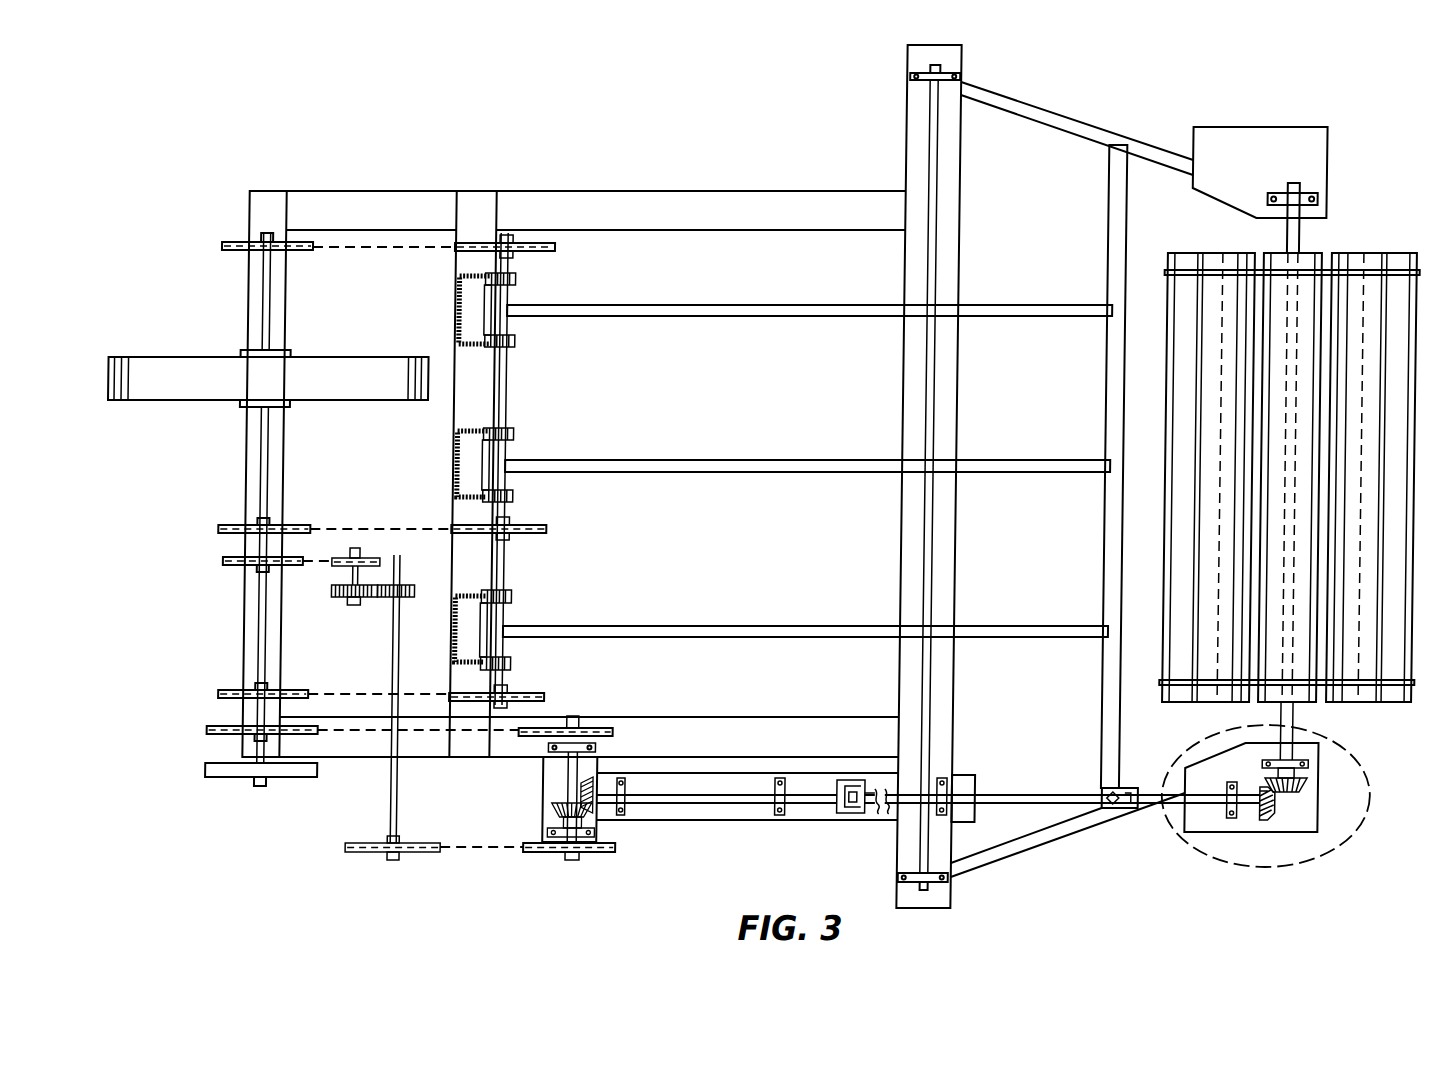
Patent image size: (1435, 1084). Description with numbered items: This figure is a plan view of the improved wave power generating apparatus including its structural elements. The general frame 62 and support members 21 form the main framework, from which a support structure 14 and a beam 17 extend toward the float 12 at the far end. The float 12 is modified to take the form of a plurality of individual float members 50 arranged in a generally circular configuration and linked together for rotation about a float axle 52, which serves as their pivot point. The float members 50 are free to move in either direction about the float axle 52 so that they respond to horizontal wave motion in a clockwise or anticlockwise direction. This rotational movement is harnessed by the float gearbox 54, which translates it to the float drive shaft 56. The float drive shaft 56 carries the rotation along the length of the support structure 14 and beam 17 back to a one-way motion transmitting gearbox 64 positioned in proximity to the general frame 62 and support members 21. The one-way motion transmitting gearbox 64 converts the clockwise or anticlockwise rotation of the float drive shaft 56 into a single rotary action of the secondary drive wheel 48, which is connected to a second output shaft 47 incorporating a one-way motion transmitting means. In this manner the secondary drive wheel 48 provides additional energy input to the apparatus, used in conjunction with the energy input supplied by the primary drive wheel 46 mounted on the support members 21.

The float 12 is at (178, 388).
The support structure 14 is at (1058, 118).
The beam 17 is at (795, 316).
The support member 21 is at (479, 205).
The drive wheel 46 is at (528, 253).
The second output shaft 47 is at (573, 772).
The secondary drive wheel 48 is at (603, 862).
The float members 50 is at (1210, 425).
The float axle 52 is at (1290, 237).
The float gearbox 54 is at (1205, 864).
The float drive shaft 56 is at (1037, 797).
The general frame 62 is at (584, 207).
The one-way motion transmitting gearbox 64 is at (561, 797).